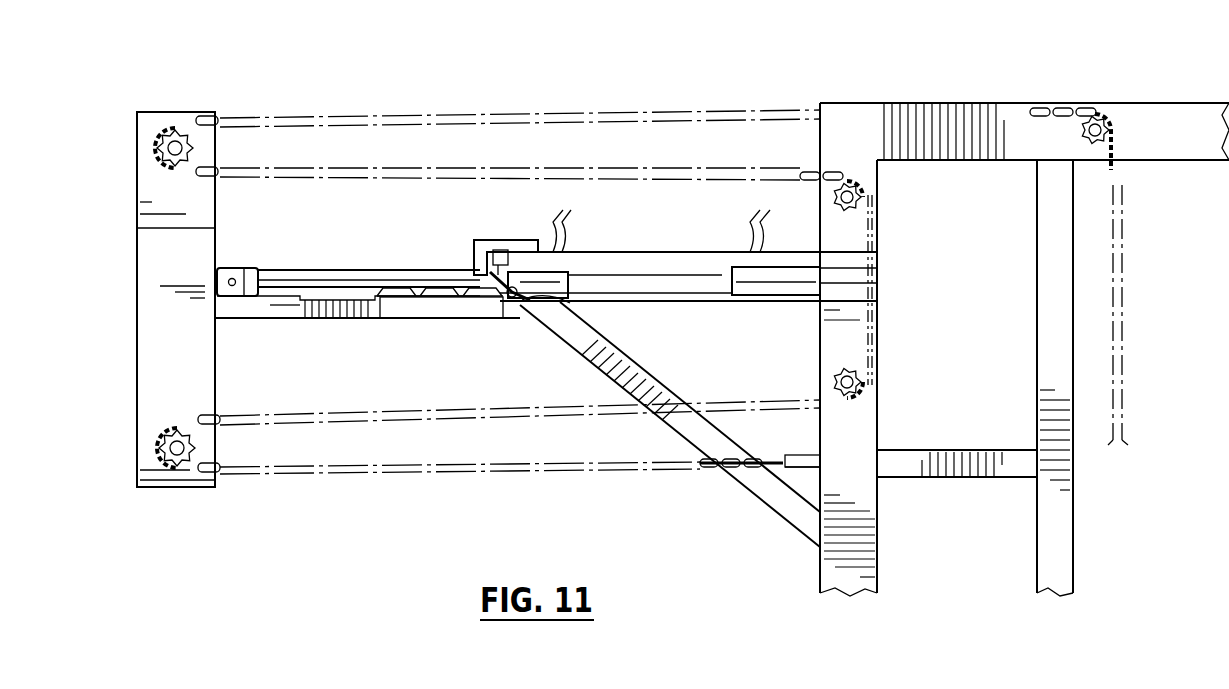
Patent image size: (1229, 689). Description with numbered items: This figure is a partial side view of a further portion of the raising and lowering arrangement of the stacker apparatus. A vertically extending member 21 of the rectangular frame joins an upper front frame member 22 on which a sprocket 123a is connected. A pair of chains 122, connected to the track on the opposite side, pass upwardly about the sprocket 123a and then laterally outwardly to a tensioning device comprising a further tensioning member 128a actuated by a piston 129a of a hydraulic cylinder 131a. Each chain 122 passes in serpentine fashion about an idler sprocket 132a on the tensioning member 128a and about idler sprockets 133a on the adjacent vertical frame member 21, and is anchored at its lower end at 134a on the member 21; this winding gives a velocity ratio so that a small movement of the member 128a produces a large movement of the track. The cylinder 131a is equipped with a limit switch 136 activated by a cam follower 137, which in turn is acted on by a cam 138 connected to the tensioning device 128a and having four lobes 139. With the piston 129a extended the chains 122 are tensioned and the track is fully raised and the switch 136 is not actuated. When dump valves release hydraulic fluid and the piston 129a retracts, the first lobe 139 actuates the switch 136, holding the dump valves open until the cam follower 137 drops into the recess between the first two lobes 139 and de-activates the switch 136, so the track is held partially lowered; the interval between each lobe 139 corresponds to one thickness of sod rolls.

The vertically extending member 21 is at (878, 577).
The upper front frame member 22 is at (1158, 115).
The chain 122 is at (1122, 246).
The sprocket 123a is at (1094, 113).
The tensioning member 128a is at (140, 296).
The piston 129a is at (335, 270).
The hydraulic cylinder 131a is at (643, 262).
The idler sprocket 132a is at (177, 135).
The idler sprocket 133a is at (872, 222).
The chain anchor 134a is at (793, 466).
The limit switch 136 is at (499, 250).
The cam follower 137 is at (548, 302).
The cam 138 is at (275, 306).
The lobe 139 is at (427, 286).